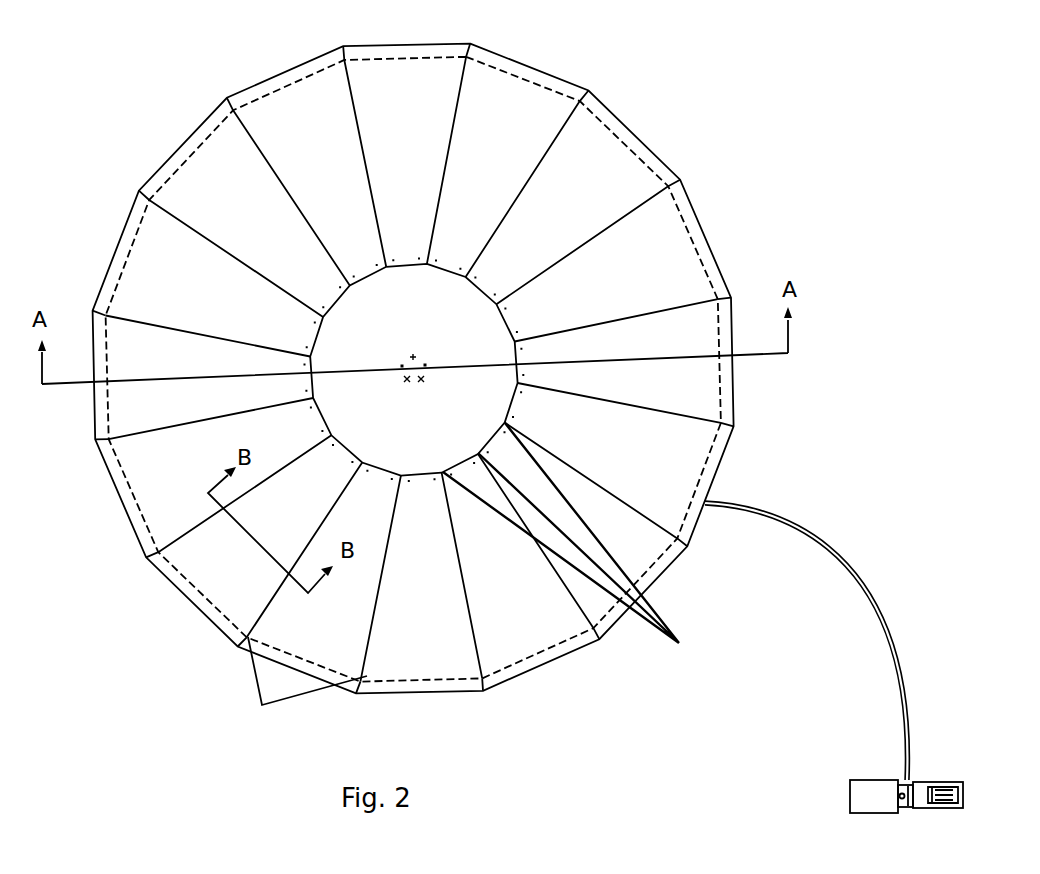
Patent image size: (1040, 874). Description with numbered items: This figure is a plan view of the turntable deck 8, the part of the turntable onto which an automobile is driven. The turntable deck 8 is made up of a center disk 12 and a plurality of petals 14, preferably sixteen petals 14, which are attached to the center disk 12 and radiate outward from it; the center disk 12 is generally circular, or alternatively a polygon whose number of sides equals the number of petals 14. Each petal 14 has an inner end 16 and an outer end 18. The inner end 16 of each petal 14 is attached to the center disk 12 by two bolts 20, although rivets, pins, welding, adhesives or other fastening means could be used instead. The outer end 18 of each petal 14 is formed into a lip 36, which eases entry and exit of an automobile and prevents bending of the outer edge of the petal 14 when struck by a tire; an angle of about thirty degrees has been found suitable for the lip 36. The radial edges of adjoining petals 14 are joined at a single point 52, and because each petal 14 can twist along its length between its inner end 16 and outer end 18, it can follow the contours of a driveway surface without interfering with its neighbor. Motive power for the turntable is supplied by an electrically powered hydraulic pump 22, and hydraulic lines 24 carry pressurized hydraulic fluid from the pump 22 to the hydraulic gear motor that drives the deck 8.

The turntable deck 8 is at (160, 575).
The center disk 12 is at (366, 331).
The petal 14 is at (578, 178).
The inner end 16 is at (470, 253).
The outer end 18 is at (516, 108).
The bolts 20 is at (578, 546).
The hydraulic pump 22 is at (930, 782).
The hydraulic lines 24 is at (870, 590).
The lip 36 is at (697, 220).
The single point 52 is at (299, 686).